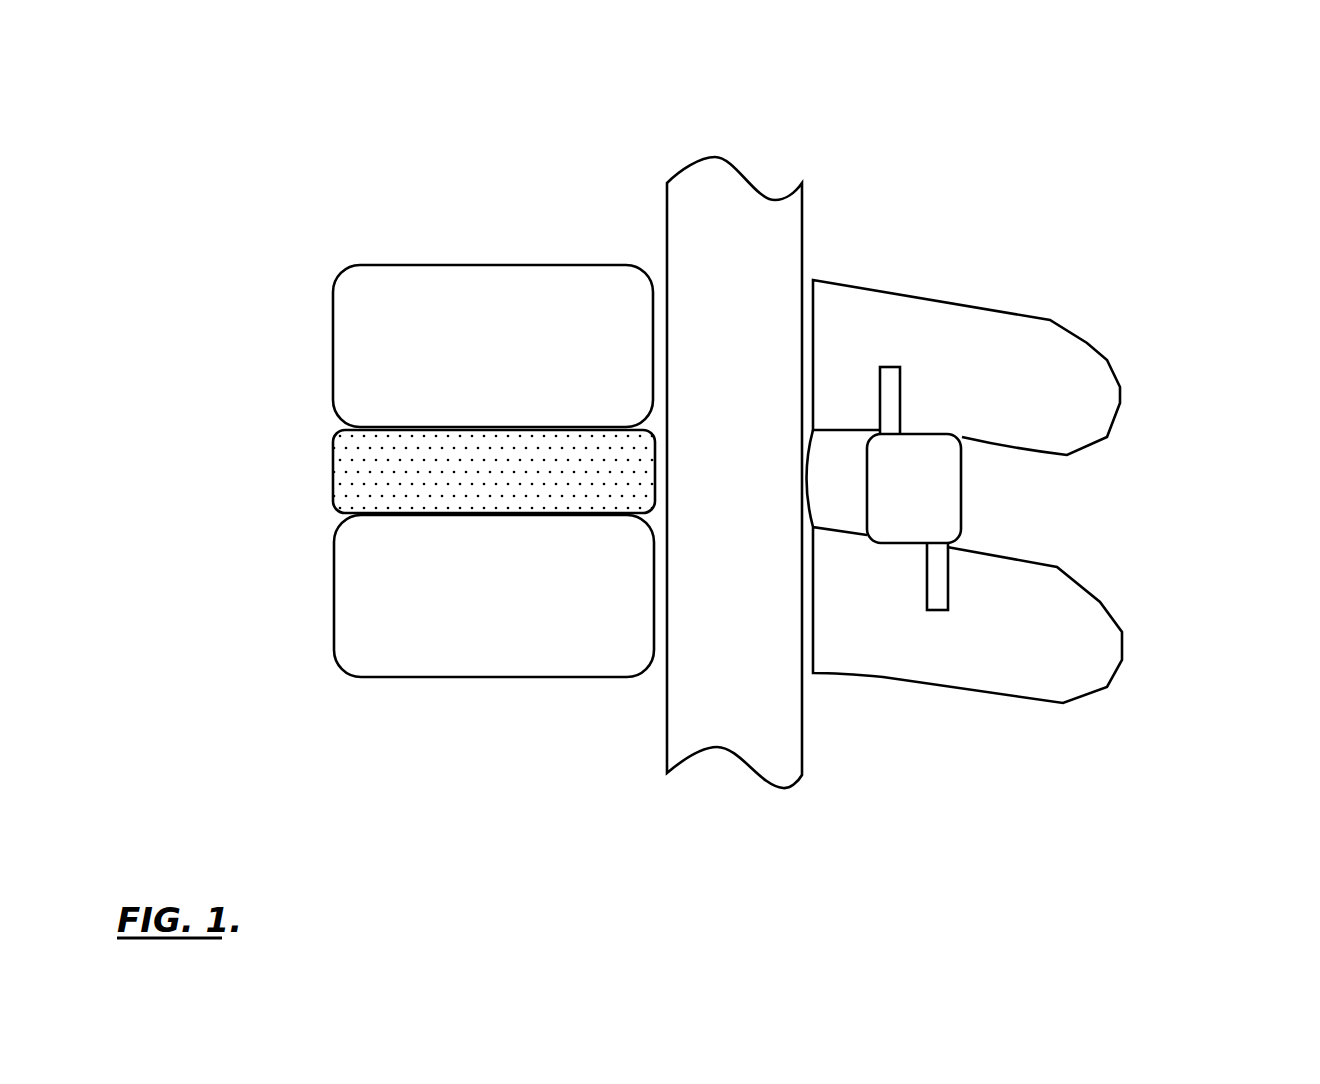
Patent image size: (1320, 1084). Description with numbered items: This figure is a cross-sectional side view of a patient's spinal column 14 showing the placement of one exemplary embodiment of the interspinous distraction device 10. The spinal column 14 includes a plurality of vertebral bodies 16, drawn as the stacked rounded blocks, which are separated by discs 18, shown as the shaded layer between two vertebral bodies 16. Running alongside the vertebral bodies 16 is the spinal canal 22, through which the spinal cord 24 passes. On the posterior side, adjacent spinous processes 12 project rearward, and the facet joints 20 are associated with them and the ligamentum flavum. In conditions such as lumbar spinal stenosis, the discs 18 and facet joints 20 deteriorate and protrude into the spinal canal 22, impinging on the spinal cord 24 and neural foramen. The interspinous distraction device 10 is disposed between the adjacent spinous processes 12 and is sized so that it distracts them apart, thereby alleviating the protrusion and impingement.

The interspinous distraction device 10 is at (962, 485).
The spinous processes 12 is at (1087, 343).
The spinal column 14 is at (480, 210).
The vertebral bodies 16 is at (333, 345).
The discs 18 is at (333, 463).
The facet joints 20 is at (838, 478).
The spinal canal 22 is at (812, 267).
The spinal cord 24 is at (802, 220).